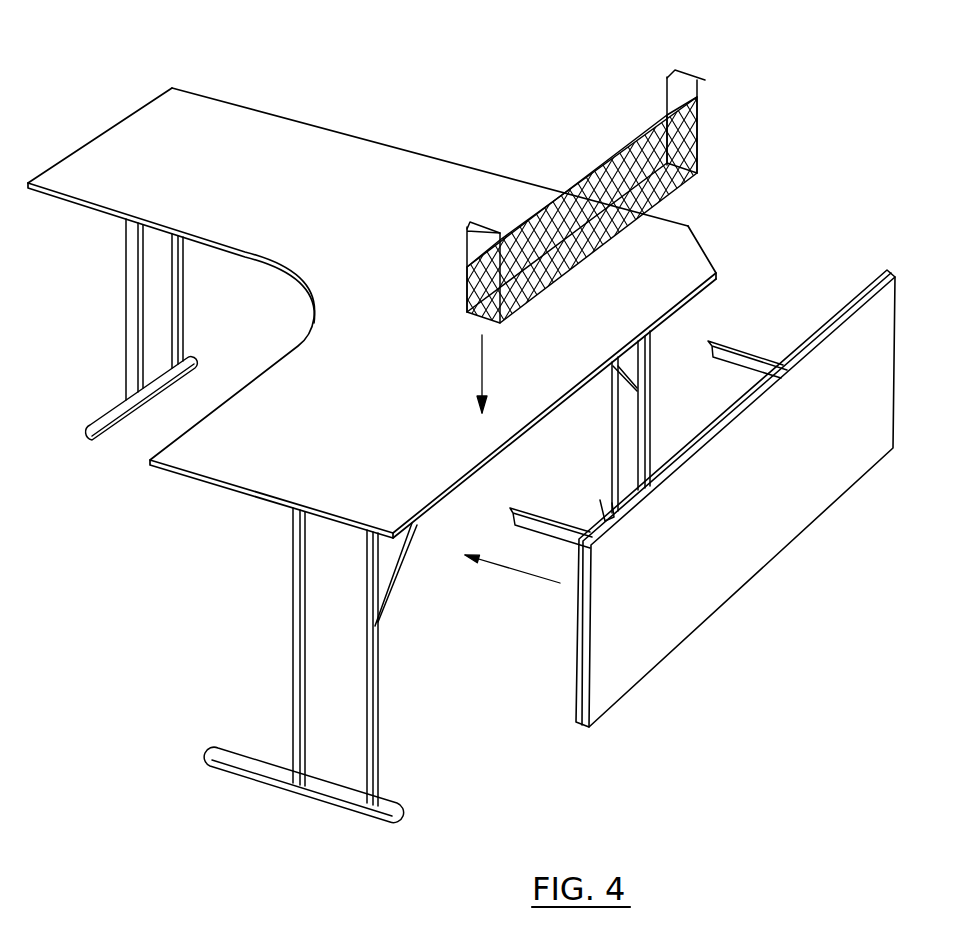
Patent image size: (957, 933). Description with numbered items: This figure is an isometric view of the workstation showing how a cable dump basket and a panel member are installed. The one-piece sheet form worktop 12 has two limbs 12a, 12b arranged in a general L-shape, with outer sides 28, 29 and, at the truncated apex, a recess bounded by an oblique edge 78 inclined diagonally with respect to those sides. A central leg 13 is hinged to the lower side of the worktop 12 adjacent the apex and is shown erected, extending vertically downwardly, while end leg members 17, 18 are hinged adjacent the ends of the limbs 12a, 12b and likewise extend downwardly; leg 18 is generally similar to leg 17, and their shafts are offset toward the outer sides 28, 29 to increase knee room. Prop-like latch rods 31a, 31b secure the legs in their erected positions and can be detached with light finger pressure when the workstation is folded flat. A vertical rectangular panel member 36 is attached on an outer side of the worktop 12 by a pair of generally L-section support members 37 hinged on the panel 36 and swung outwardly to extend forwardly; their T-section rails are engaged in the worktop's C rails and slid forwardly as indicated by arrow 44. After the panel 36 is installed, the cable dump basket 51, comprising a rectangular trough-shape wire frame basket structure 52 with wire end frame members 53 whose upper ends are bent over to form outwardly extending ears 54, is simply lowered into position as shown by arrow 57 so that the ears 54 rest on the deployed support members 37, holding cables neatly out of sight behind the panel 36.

The worktop 12 is at (400, 296).
The limb 12a is at (222, 107).
The limb 12b is at (272, 493).
The outer side 29 is at (338, 131).
The outer side 28 is at (503, 452).
The oblique edge 78 is at (703, 250).
The end leg member 17 is at (120, 433).
The end leg member 18 is at (318, 808).
The central leg 13 is at (627, 426).
The latch rod 31a is at (632, 378).
The latch rod 31b is at (395, 600).
The panel member 36 is at (858, 342).
The support member 37 is at (752, 361).
The arrow 44 is at (522, 575).
The cable dump basket 51 is at (590, 173).
The wire frame basket structure 52 is at (688, 155).
The wire end frame member 53 is at (467, 250).
The ear 54 is at (467, 230).
The arrow 57 is at (480, 356).